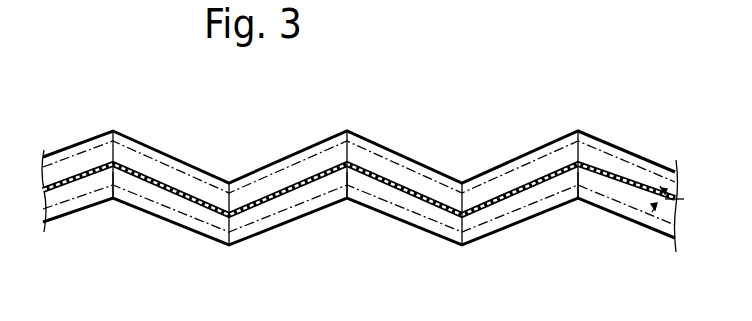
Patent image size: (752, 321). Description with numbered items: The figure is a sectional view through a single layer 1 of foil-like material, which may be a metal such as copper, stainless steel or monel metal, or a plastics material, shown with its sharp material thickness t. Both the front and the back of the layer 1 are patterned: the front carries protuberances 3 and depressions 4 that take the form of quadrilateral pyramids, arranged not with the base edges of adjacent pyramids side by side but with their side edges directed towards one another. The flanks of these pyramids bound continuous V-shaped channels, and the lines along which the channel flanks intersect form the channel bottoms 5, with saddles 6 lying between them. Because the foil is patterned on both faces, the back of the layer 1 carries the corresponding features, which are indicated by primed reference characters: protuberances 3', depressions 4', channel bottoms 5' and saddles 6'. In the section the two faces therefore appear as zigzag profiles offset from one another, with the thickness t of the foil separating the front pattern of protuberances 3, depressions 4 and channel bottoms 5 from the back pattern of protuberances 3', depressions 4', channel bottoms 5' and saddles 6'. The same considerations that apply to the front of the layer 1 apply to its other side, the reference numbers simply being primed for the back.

The layer 1 is at (686, 173).
The protuberances 3 is at (358, 135).
The protuberances 3' is at (359, 233).
The depressions 4 is at (359, 236).
The depressions 4' is at (359, 147).
The channel bottoms 5 is at (359, 175).
The channel bottoms 5' is at (359, 182).
The saddles 6 is at (359, 173).
The saddles 6' is at (341, 216).
The material thickness t is at (673, 195).